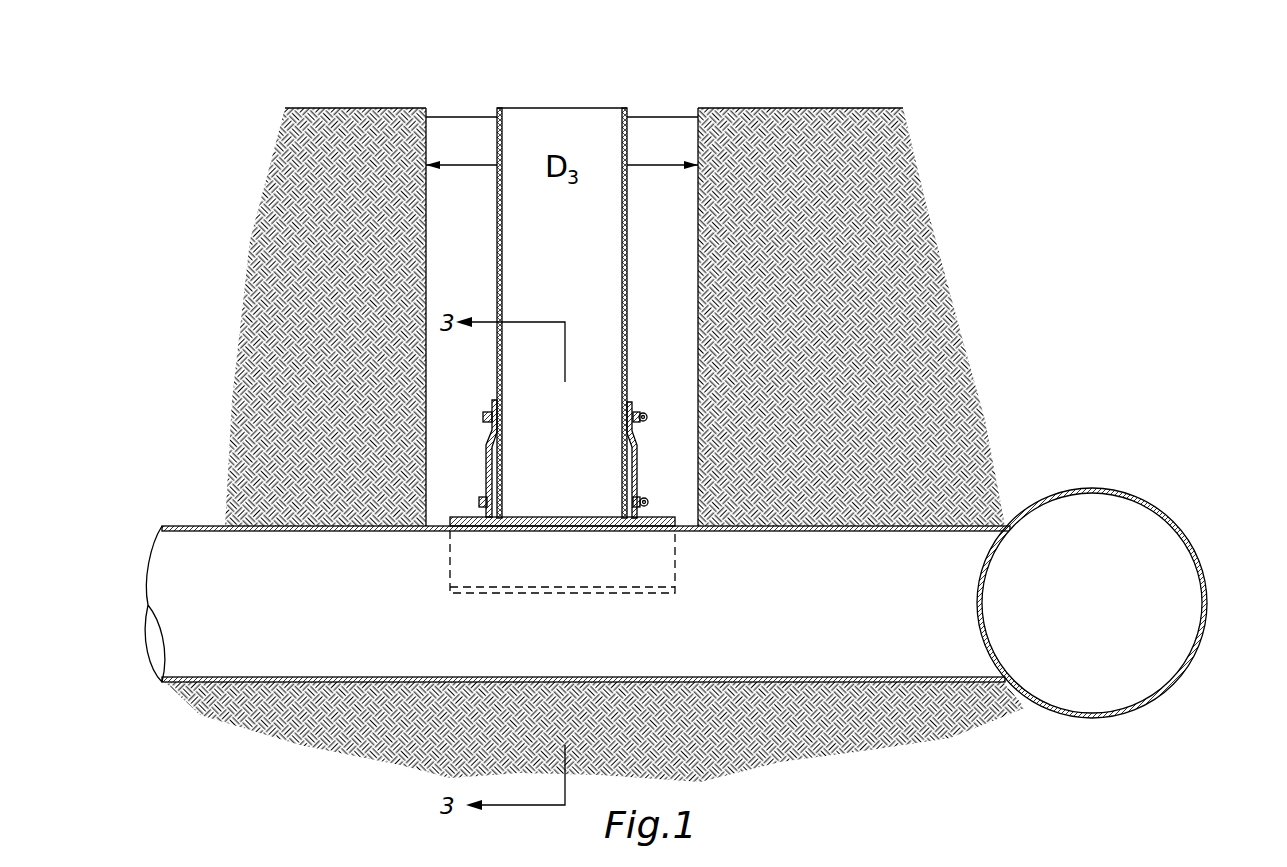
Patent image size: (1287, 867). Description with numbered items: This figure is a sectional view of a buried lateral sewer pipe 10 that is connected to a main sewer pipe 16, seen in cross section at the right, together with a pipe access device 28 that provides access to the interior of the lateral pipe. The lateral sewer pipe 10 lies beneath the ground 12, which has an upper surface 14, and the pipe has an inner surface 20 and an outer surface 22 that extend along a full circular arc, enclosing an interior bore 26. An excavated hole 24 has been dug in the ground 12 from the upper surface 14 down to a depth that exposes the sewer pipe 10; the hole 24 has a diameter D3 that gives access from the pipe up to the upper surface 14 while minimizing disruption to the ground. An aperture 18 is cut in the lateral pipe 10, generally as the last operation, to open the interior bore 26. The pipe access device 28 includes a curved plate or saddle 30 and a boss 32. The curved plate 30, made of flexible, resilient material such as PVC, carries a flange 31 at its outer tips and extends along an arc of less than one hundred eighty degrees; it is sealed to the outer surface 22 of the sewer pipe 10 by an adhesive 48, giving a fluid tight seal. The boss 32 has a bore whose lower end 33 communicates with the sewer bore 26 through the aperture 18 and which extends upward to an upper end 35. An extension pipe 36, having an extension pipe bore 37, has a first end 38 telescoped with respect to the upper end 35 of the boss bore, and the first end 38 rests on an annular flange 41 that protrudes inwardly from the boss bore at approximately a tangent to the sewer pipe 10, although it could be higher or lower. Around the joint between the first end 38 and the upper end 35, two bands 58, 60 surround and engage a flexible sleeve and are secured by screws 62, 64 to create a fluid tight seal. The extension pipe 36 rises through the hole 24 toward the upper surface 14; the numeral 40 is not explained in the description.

The lateral sewer pipe 10 is at (192, 518).
The ground 12 is at (268, 245).
The upper surface 14 is at (330, 106).
The main sewer pipe 16 is at (1108, 482).
The aperture 18 is at (610, 530).
The inner surface 20 is at (883, 532).
The outer surface 22 is at (920, 525).
The excavated hole 24 is at (426, 240).
The interior bore 26 is at (853, 598).
The pipe access device 28 is at (490, 530).
The curved plate 30 is at (482, 517).
The flange 31 is at (630, 596).
The boss 32 is at (637, 480).
The lower end 33 is at (497, 508).
The upper end 35 is at (624, 456).
The extension pipe 36 is at (497, 100).
The extension pipe bore 37 is at (525, 283).
The first end 38 is at (633, 494).
The riser outer wall 40 is at (627, 137).
The annular flange 41 is at (545, 530).
The adhesive 48 is at (438, 530).
The band 58 is at (487, 412).
The band 60 is at (484, 498).
The screw 62 is at (647, 412).
The screw 64 is at (649, 497).